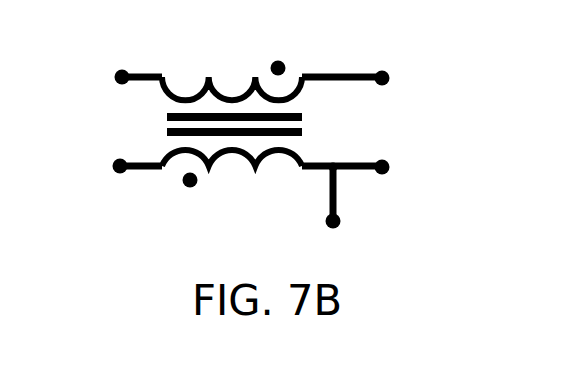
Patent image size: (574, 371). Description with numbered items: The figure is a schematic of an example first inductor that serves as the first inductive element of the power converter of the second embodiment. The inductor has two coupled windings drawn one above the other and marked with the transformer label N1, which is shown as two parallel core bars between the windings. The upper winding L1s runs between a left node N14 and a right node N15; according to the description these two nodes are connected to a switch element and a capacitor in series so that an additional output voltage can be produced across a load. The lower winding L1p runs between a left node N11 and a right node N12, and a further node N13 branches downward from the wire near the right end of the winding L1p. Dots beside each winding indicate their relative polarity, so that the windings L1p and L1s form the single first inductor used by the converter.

The transformer N1 is at (216, 121).
The secondary winding L1s is at (252, 67).
The primary winding L1p is at (251, 182).
The node N11 is at (88, 167).
The node N12 is at (418, 170).
The node N13 is at (341, 216).
The node N14 is at (90, 77).
The node N15 is at (419, 82).